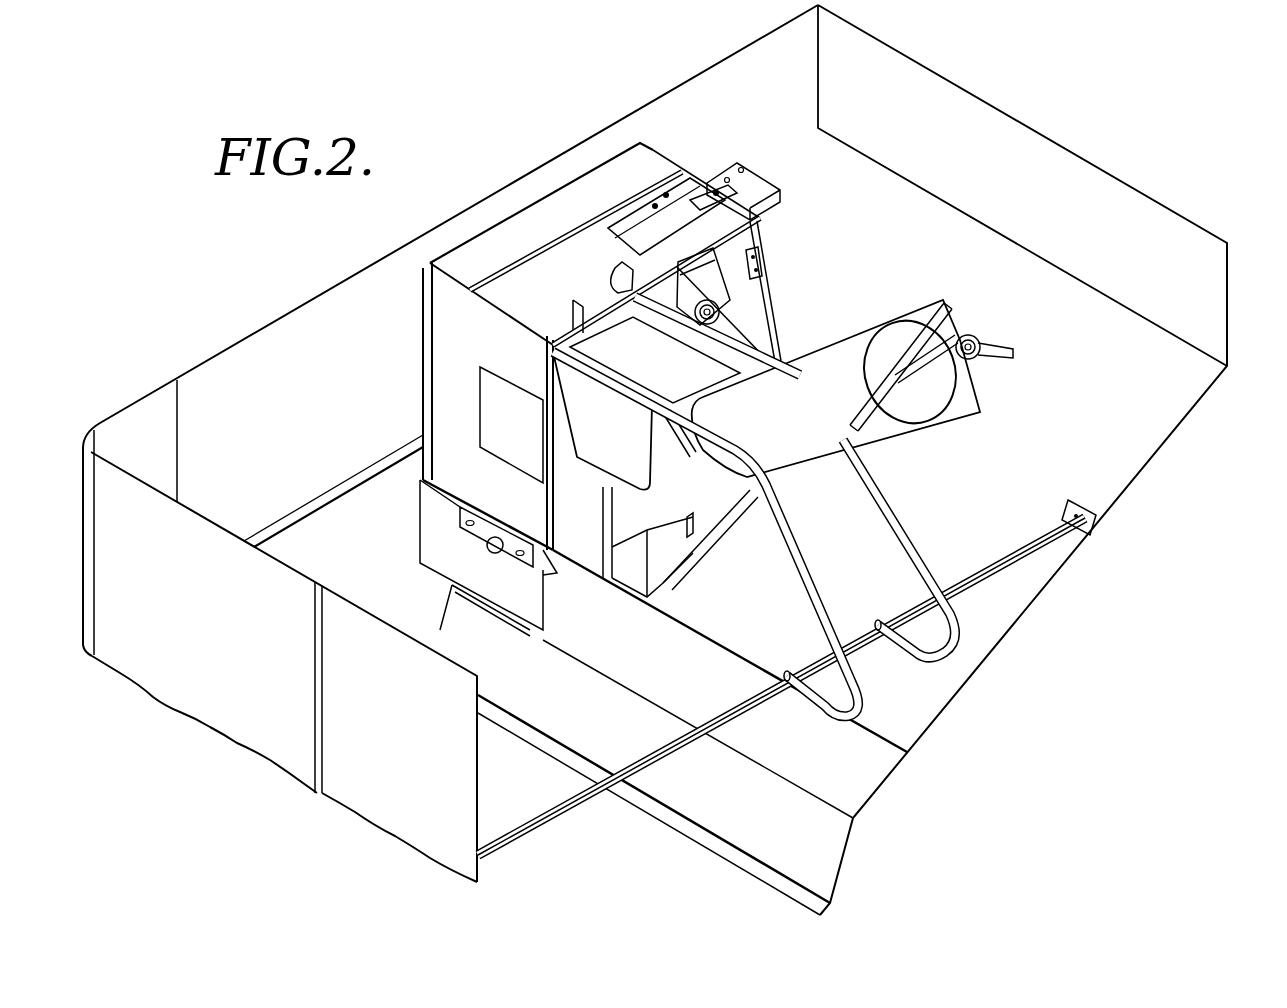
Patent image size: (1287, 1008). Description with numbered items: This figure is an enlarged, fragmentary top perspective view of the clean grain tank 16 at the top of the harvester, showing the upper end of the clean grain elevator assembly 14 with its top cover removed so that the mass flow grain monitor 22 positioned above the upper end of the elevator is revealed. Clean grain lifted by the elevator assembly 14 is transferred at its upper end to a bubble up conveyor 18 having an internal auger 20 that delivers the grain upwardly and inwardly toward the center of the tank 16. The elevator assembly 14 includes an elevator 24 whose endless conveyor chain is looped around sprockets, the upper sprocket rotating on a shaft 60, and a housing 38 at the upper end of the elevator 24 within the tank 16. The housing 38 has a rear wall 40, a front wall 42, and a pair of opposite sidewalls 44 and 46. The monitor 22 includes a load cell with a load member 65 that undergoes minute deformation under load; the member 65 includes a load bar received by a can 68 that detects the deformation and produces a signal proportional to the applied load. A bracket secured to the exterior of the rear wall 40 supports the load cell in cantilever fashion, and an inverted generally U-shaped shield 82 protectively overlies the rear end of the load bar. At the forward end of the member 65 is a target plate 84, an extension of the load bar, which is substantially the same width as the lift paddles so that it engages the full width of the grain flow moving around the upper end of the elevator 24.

The clean grain elevator assembly 14 is at (785, 296).
The clean grain tank 16 is at (1073, 130).
The bubble up conveyor 18 is at (893, 460).
The internal auger 20 is at (889, 338).
The mass flow grain monitor 22 is at (754, 147).
The elevator 24 is at (600, 283).
The housing 38 is at (408, 411).
The rear wall 40 is at (668, 192).
The front wall 42 is at (448, 338).
The sidewall 44 is at (597, 177).
The sidewall 46 is at (747, 333).
The shaft 60 is at (678, 318).
The load member 65 is at (760, 236).
The can 68 is at (716, 188).
The shield 82 is at (783, 170).
The target plate 84 is at (607, 230).